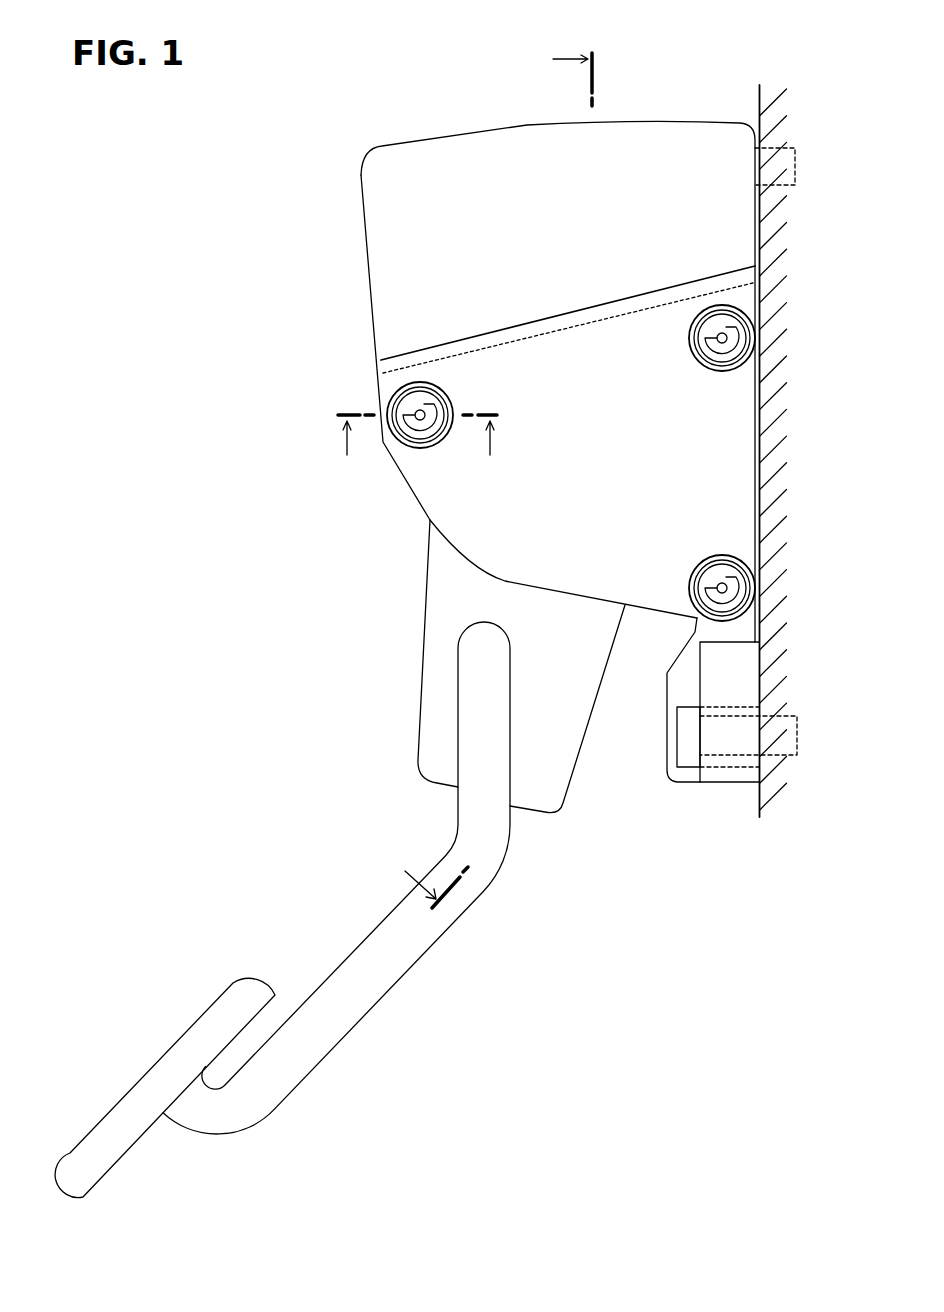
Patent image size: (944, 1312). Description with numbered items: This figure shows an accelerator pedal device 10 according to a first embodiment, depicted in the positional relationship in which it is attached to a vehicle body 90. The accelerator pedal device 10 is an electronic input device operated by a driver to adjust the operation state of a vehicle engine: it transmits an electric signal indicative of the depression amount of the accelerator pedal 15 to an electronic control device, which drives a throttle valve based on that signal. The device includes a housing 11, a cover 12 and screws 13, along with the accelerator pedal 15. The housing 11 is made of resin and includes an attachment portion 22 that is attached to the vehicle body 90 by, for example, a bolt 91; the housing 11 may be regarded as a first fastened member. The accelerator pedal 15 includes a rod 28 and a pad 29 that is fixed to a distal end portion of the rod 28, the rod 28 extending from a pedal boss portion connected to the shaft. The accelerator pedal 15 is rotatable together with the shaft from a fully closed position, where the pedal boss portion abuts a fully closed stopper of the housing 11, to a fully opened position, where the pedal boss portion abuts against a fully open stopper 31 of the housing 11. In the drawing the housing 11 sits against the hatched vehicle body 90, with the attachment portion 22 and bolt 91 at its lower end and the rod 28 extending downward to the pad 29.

The accelerator pedal device 10 is at (357, 142).
The housing 11 is at (446, 137).
The cover 12 is at (560, 388).
The screws 13 is at (405, 398).
The accelerator pedal 15 is at (419, 684).
The attachment portion 22 is at (737, 677).
The rod 28 is at (383, 997).
The pad 29 is at (152, 1068).
The fully open stopper 31 is at (664, 728).
The vehicle body 90 is at (770, 478).
The bolt 91 is at (690, 770).